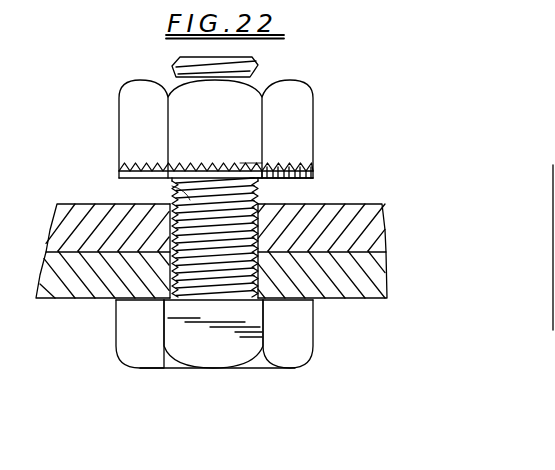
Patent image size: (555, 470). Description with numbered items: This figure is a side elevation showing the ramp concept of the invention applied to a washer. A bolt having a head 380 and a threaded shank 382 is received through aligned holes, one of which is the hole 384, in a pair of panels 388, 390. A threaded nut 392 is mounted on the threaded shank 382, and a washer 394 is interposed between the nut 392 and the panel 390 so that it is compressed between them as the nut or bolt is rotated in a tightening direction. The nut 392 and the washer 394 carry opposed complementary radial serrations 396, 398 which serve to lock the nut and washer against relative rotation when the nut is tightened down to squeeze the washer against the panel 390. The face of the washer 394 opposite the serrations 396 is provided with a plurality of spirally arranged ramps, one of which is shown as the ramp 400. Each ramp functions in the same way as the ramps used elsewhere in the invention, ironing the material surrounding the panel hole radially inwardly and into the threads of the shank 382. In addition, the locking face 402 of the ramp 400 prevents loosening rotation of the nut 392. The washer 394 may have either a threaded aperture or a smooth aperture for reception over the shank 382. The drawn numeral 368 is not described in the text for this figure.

The thread 368 is at (173, 197).
The head 380 is at (232, 355).
The threaded shank 382 is at (191, 224).
The hole 384 is at (172, 270).
The panel 388 is at (375, 285).
The panel 390 is at (375, 233).
The threaded nut 392 is at (303, 143).
The washer 394 is at (313, 175).
The radial serrations 396 is at (152, 165).
The radial serrations 398 is at (283, 178).
The ramp 400 is at (252, 218).
The locking face 402 is at (254, 178).